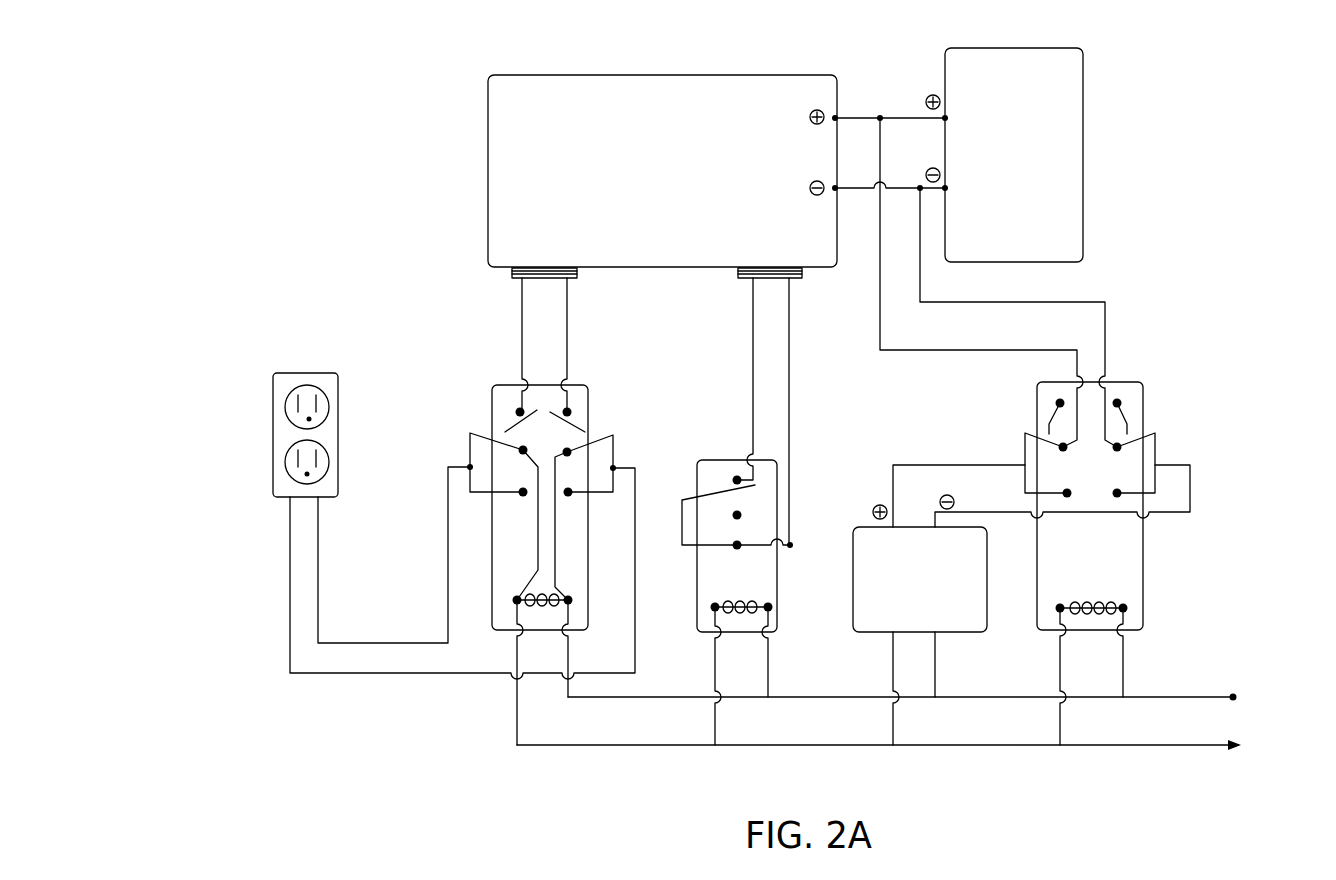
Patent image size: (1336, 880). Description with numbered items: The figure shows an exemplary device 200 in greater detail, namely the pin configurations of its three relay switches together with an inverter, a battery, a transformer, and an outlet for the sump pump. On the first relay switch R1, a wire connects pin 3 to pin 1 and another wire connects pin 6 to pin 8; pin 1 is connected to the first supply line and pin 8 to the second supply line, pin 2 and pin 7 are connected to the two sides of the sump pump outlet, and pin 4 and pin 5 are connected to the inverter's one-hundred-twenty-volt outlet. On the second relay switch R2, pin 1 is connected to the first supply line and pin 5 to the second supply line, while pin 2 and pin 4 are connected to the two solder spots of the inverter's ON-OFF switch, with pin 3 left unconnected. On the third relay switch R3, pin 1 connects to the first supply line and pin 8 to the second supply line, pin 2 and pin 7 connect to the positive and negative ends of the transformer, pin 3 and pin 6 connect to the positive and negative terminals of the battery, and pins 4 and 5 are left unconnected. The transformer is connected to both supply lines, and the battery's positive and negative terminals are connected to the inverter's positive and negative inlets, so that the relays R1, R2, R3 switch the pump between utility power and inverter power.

The device 200 is at (1238, 131).
The first relay switch R1 is at (541, 593).
The second relay switch R2 is at (736, 631).
The third relay switch R3 is at (1090, 592).
The pin 1 is at (517, 600).
The pin 2 is at (523, 497).
The pin 3 is at (523, 450).
The pin 4 is at (520, 412).
The pin 5 is at (567, 412).
The pin 6 is at (567, 452).
The pin 7 is at (568, 497).
The pin 8 is at (568, 600).